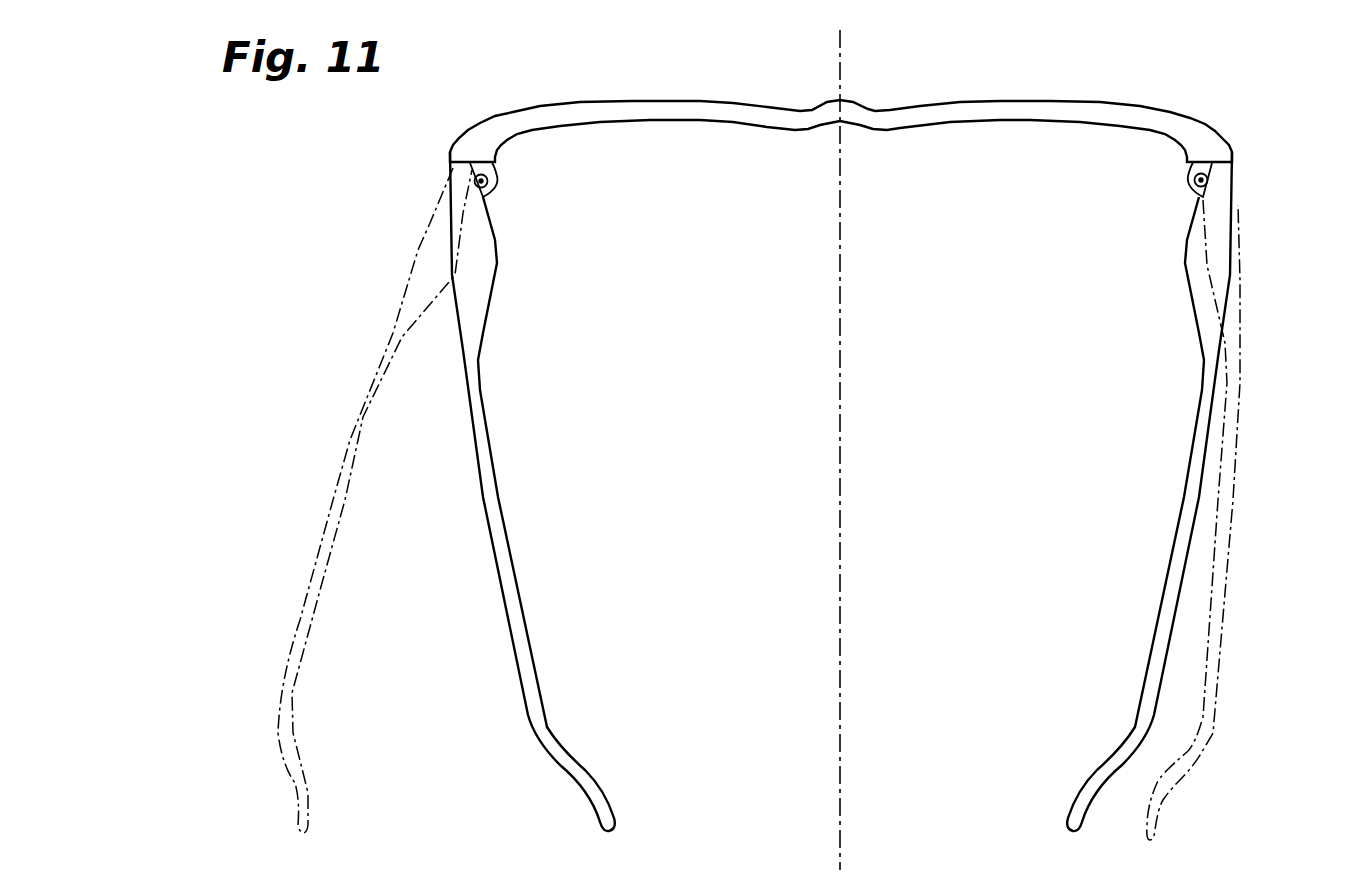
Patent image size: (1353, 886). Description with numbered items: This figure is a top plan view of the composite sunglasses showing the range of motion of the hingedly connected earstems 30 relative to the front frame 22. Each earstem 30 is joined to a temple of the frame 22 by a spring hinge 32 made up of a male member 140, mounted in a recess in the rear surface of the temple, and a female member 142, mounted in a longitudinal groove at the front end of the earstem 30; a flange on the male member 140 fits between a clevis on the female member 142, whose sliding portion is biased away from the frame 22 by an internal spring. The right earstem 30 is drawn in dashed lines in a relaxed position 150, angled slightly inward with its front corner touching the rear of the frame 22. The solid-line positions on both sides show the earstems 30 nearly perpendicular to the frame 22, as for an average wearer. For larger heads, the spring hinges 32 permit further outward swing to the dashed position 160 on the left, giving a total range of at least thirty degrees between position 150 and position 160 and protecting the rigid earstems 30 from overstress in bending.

The front frame 22 is at (1130, 100).
The earstems 30 is at (470, 368).
The spring hinges 32 is at (841, 211).
The male member 140 is at (1192, 172).
The female member 142 is at (1200, 190).
The position 150 is at (1228, 470).
The position 160 is at (358, 420).